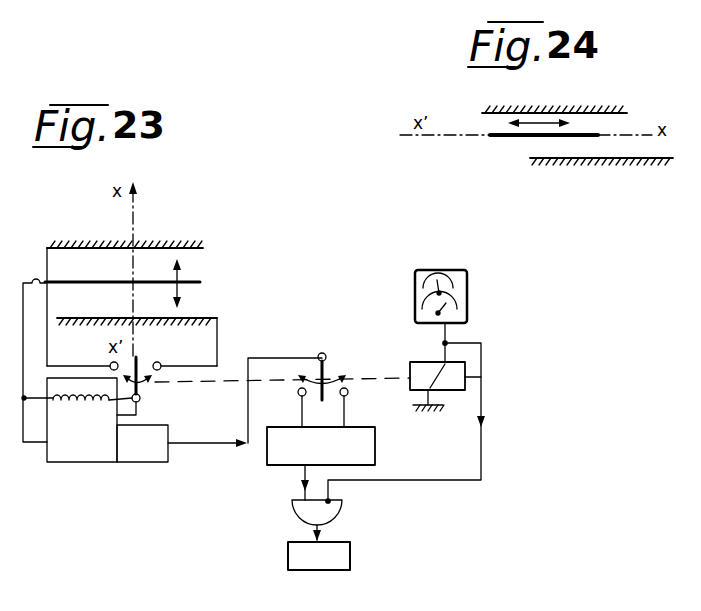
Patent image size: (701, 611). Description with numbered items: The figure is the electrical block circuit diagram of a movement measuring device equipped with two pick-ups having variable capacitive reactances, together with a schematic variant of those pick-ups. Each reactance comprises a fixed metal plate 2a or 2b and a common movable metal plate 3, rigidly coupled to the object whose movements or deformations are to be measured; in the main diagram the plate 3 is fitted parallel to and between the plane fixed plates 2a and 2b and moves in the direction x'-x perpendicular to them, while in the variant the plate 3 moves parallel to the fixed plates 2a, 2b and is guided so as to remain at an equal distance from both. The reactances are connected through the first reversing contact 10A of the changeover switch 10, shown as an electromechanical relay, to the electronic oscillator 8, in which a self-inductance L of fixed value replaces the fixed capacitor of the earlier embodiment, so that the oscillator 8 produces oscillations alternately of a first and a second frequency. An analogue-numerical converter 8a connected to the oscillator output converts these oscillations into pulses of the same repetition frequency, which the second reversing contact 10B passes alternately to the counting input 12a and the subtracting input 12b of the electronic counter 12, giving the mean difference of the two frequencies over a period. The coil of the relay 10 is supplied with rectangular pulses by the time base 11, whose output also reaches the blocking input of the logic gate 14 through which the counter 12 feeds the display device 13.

In FIG. 23, the fixed metal plate 2a is at (184, 241).
In FIG. 24, the fixed metal plate 2a is at (587, 112).
In FIG. 23, the fixed metal plate 2b is at (201, 317).
In FIG. 24, the fixed metal plate 2b is at (600, 162).
In FIG. 23, the movable metal plate 3 is at (88, 281).
In FIG. 24, the movable metal plate 3 is at (502, 138).
In FIG. 23, the electronic oscillator 8 is at (89, 441).
In FIG. 23, the self-inductance L is at (80, 405).
In FIG. 23, the analogue-numerical converter 8a is at (138, 451).
In FIG. 23, the changeover switch 10 is at (482, 379).
In FIG. 23, the first reversing contact 10A is at (142, 362).
In FIG. 23, the second reversing contact 10B is at (325, 371).
In FIG. 23, the time base 11 is at (470, 295).
In FIG. 23, the electronic counter 12 is at (363, 445).
In FIG. 23, the counting input 12a is at (348, 395).
In FIG. 23, the subtracting input 12b is at (297, 392).
In FIG. 23, the display device 13 is at (352, 557).
In FIG. 23, the logic gate 14 is at (343, 510).